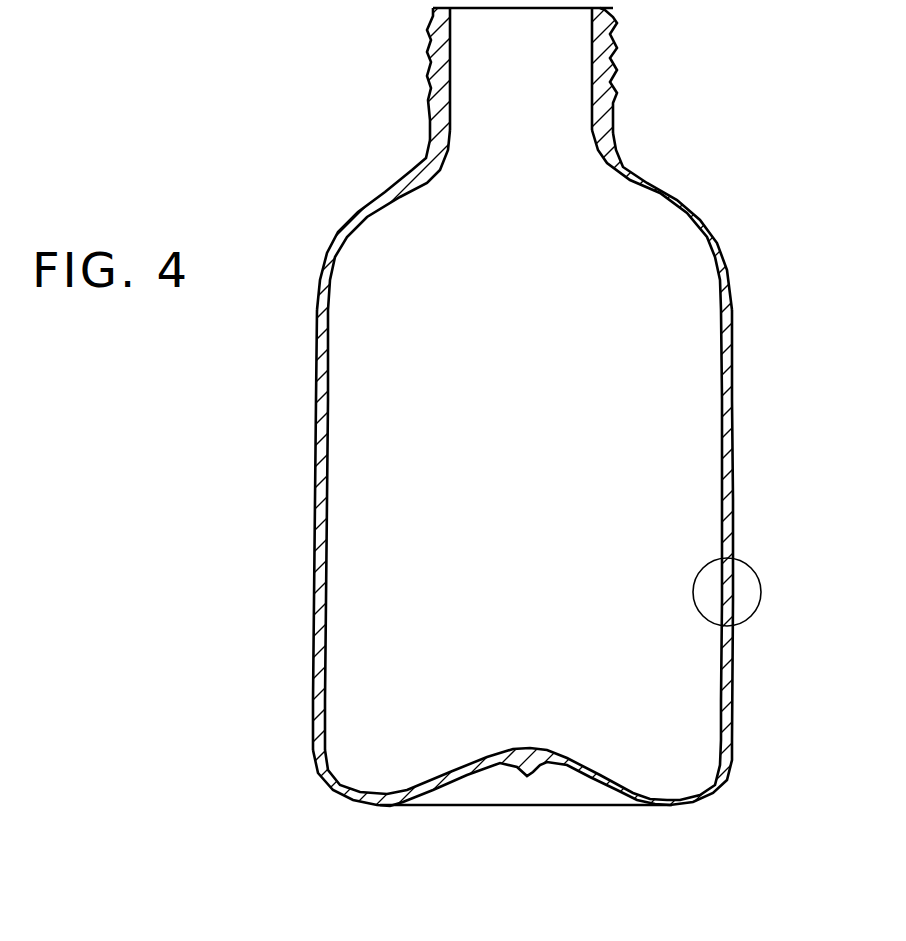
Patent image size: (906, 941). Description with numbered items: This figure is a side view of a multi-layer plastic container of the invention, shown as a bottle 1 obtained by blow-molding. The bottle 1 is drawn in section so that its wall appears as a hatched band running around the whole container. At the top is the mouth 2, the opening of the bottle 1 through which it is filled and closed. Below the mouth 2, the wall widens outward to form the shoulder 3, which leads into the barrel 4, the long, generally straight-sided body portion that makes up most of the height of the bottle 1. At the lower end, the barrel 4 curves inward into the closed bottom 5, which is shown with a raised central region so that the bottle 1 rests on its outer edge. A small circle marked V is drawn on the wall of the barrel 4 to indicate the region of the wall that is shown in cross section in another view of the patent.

The bottle 1 is at (453, 470).
The mouth 2 is at (612, 22).
The shoulder 3 is at (670, 193).
The barrel 4 is at (731, 488).
The closed bottom 5 is at (603, 787).
The detail view region V is at (744, 592).